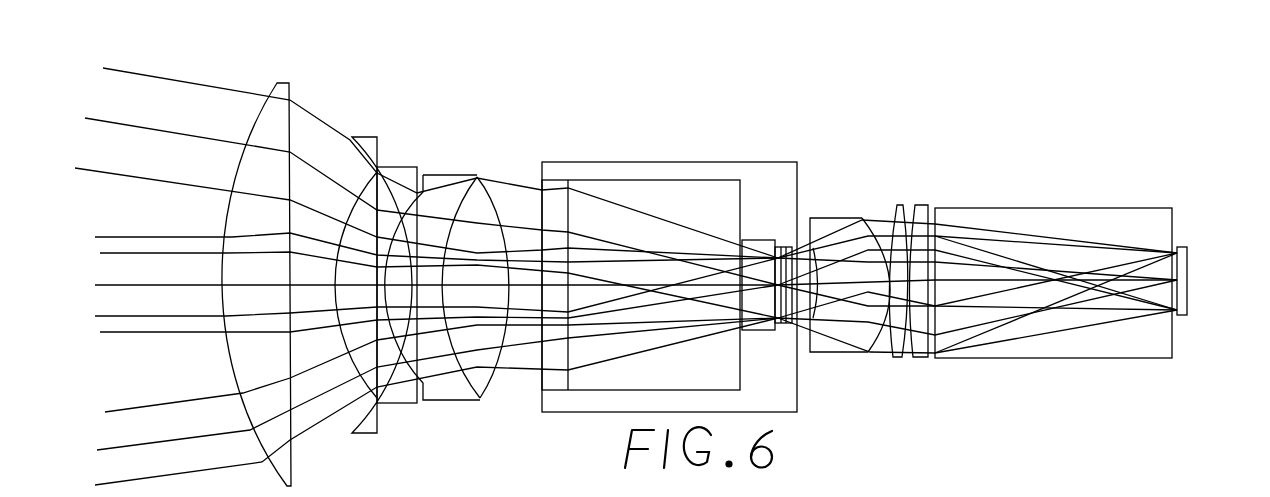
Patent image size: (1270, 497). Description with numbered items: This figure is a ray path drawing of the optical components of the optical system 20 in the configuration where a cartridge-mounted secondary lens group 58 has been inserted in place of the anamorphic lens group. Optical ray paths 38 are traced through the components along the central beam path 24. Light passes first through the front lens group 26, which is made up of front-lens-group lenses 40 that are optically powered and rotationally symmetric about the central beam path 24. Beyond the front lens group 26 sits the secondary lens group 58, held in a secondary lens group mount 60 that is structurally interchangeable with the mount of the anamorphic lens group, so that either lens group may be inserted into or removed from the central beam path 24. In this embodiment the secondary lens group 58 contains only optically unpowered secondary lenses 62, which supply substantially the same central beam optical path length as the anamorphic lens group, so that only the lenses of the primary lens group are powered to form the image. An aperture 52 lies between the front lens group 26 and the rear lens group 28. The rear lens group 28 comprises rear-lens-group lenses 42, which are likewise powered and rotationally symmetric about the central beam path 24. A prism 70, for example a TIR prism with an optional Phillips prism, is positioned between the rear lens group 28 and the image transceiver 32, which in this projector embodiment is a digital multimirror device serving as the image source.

The optical system 20 is at (940, 101).
The central beam path 24 is at (107, 285).
The front lens group 26 is at (365, 279).
The rear lens group 28 is at (882, 276).
The image transceiver 32 is at (1187, 268).
The optical ray paths 38 is at (142, 178).
The front-lens-group lenses 40 is at (292, 466).
The rear-lens-group lenses 42 is at (840, 345).
The aperture 52 is at (797, 252).
The secondary lens group 58 is at (594, 190).
The secondary lens group mount 60 is at (667, 162).
The secondary lenses 62 is at (542, 189).
The prism 70 is at (1062, 208).